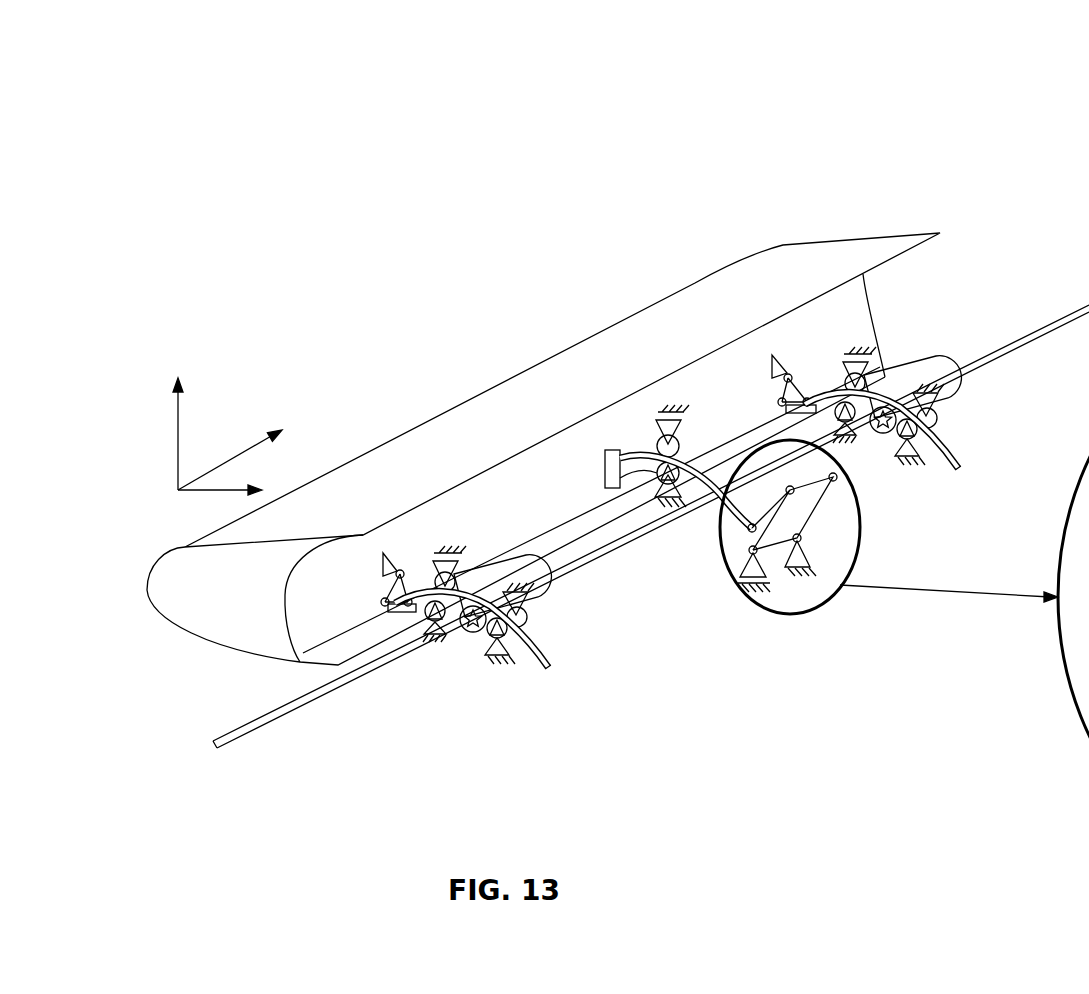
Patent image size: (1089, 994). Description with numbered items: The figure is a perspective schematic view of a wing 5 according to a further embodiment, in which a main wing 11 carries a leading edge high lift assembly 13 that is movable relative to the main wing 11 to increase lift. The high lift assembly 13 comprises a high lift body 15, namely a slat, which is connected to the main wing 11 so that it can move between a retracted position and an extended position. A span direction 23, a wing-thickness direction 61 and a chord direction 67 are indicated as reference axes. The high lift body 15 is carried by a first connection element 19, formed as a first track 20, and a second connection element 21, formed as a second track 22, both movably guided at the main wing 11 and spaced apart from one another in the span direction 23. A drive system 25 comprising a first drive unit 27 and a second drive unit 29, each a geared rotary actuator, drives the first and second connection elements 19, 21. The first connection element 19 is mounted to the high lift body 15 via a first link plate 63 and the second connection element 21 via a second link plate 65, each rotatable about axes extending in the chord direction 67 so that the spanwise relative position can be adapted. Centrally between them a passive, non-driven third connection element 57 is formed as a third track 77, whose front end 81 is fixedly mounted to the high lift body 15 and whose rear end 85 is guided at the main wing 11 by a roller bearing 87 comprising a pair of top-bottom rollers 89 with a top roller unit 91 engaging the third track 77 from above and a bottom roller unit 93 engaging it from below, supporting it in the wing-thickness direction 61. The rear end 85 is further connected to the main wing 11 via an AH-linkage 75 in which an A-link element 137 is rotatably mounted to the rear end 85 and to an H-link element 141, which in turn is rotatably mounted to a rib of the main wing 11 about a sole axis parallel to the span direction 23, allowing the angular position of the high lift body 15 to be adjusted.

The wing 5 is at (112, 302).
The high lift assembly 13 is at (1003, 182).
The main wing 11 is at (948, 545).
The high lift body 15 is at (530, 428).
The first connection element 19 is at (473, 658).
The first track 20 is at (535, 658).
The second connection element 21 is at (928, 438).
The second track 22 is at (953, 457).
The span direction 23 is at (250, 447).
The wing-thickness direction 61 is at (178, 432).
The chord direction 67 is at (232, 493).
The drive system 25 is at (760, 494).
The first drive unit 27 is at (543, 597).
The second drive unit 29 is at (952, 390).
The third connection element 57 is at (693, 456).
The third track 77 is at (700, 456).
The first link plate 63 is at (397, 592).
The second link plate 65 is at (797, 397).
The AH-linkage 75 is at (797, 601).
The front end 81 is at (628, 445).
The rear end 85 is at (748, 527).
The roller bearing 87 is at (695, 377).
The pair of top-bottom rollers 89 is at (670, 396).
The top roller unit 91 is at (660, 440).
The bottom roller unit 93 is at (627, 486).
The A-link element 137 is at (747, 543).
The H-link element 141 is at (800, 510).